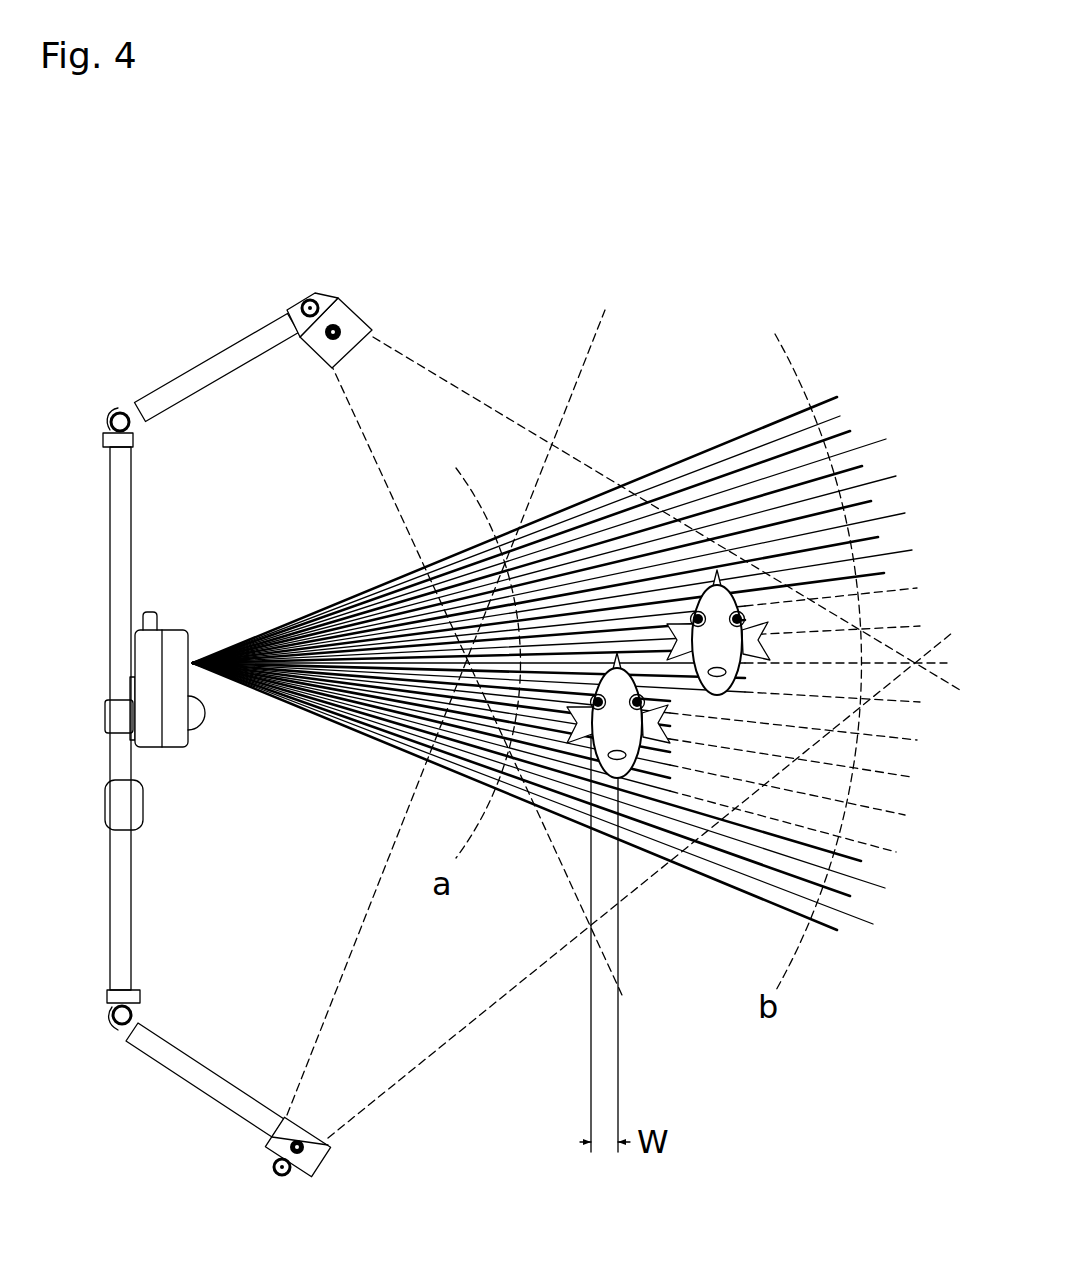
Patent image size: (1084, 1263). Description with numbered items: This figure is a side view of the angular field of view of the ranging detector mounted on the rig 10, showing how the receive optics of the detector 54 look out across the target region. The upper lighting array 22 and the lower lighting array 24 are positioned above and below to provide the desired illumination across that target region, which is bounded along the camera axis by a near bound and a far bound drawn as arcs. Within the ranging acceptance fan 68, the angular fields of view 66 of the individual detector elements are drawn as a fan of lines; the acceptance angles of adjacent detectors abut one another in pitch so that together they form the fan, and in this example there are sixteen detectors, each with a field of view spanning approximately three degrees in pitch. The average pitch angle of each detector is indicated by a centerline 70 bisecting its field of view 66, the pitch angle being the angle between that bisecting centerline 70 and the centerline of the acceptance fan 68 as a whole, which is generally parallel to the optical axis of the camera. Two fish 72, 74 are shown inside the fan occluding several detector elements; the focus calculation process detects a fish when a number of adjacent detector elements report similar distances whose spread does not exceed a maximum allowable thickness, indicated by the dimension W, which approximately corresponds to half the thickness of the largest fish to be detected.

The measuring apparatus 10 is at (175, 330).
The upper lighting array 22 is at (345, 314).
The lower lighting array 24 is at (317, 1153).
The light projector 54 is at (193, 654).
The angular fields of view 66 is at (852, 388).
The ranging acceptance fan 68 is at (718, 430).
The centerline 70 is at (866, 442).
The fish 72 is at (612, 767).
The fish 74 is at (718, 687).